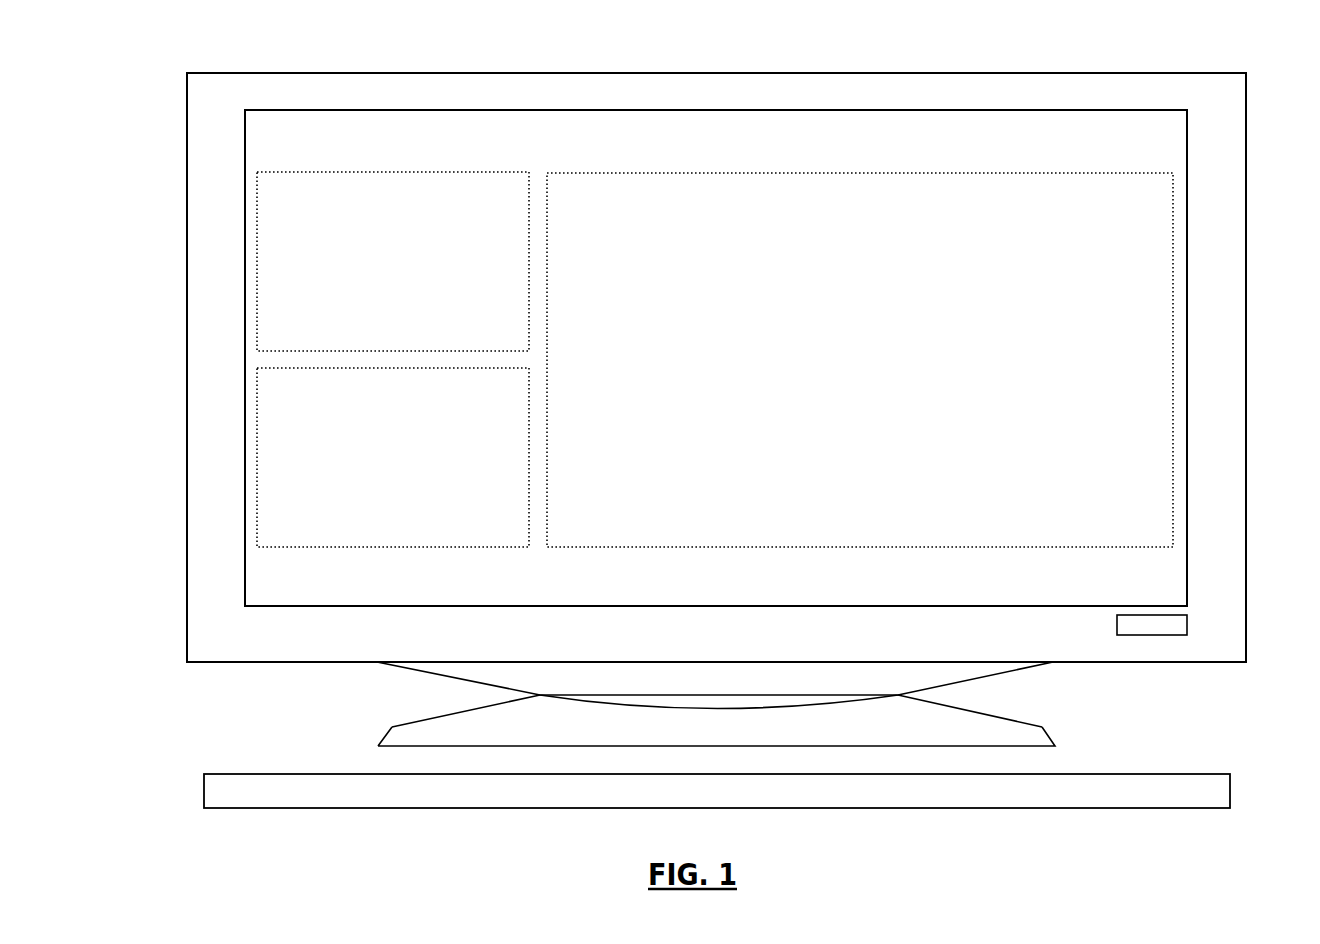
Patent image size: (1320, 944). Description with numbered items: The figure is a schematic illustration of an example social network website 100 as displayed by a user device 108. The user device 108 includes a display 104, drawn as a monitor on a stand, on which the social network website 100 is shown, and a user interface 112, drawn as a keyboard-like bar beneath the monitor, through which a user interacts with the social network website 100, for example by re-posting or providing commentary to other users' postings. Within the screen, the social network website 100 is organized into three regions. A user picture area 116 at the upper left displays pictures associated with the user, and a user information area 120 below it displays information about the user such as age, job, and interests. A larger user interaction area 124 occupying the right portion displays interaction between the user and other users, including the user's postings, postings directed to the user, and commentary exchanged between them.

The social network website 100 is at (1067, 578).
The display 104 is at (718, 73).
The user device 108 is at (219, 858).
The user interface 112 is at (1230, 791).
The user picture area 116 is at (400, 172).
The user information area 120 is at (397, 547).
The user interaction area 124 is at (862, 173).